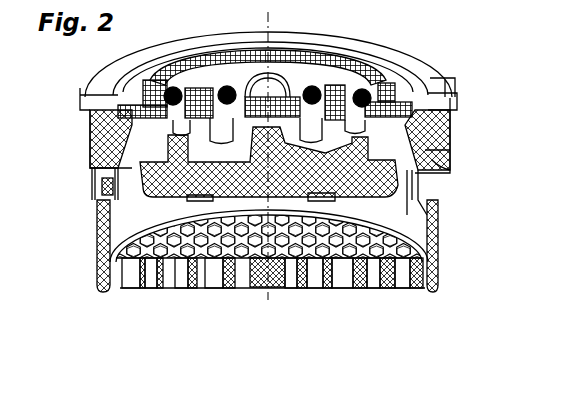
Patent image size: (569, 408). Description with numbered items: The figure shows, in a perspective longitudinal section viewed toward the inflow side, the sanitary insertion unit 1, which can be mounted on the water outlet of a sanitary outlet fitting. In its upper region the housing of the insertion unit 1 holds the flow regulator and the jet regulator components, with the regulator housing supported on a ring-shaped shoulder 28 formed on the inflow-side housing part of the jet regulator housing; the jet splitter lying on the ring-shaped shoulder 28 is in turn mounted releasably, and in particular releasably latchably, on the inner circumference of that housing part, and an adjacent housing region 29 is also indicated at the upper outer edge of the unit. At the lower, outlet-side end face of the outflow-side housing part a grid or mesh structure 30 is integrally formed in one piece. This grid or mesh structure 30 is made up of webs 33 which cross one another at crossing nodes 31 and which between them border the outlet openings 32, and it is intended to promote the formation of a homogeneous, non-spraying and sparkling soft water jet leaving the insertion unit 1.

The sanitary insertion unit 1 is at (453, 45).
The ring-shaped shoulder 28 is at (446, 160).
The upper flange part 29 is at (452, 99).
The grid or mesh structure 30 is at (368, 214).
The crossing nodes 31 is at (293, 266).
The outlet openings 32 is at (404, 278).
The webs 33 is at (182, 282).